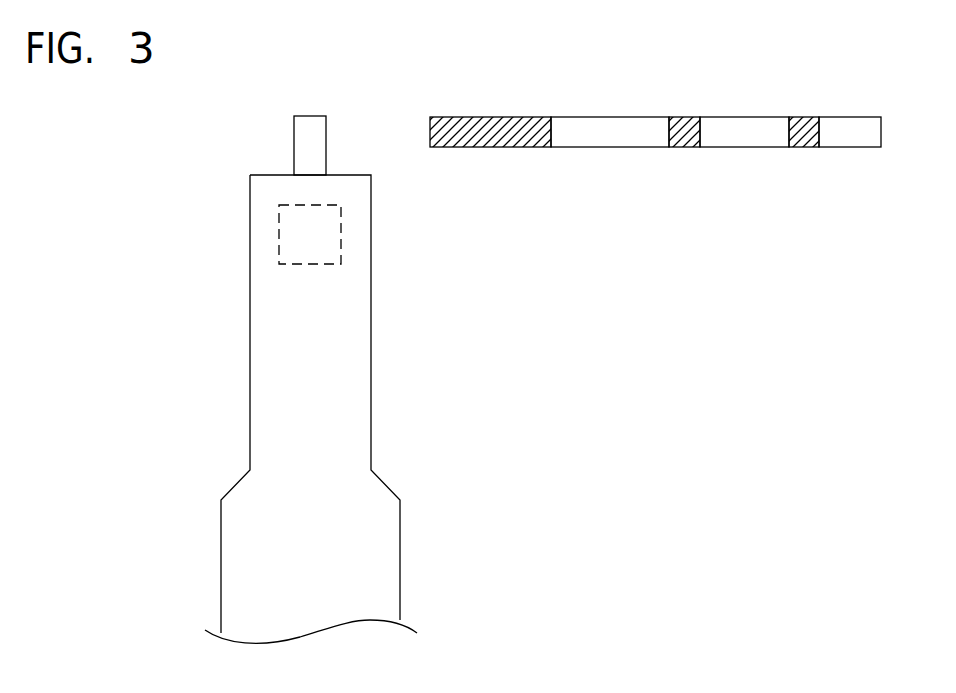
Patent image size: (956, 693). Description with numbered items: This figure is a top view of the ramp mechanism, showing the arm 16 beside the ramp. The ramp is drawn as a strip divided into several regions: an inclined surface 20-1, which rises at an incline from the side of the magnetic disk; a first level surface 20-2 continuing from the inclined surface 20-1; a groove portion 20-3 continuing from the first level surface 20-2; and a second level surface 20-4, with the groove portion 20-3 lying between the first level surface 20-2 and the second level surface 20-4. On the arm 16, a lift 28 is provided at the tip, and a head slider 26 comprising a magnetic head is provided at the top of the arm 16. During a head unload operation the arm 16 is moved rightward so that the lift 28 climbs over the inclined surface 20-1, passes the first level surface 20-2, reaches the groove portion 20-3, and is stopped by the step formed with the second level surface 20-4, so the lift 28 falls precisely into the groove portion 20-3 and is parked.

The arm 16 is at (325, 457).
The head slider 26 is at (325, 237).
The lift 28 is at (326, 149).
The inclined surface 20-1 is at (493, 117).
The first level surface 20-2 is at (613, 117).
The groove portion 20-3 is at (748, 117).
The second level surface 20-4 is at (853, 117).